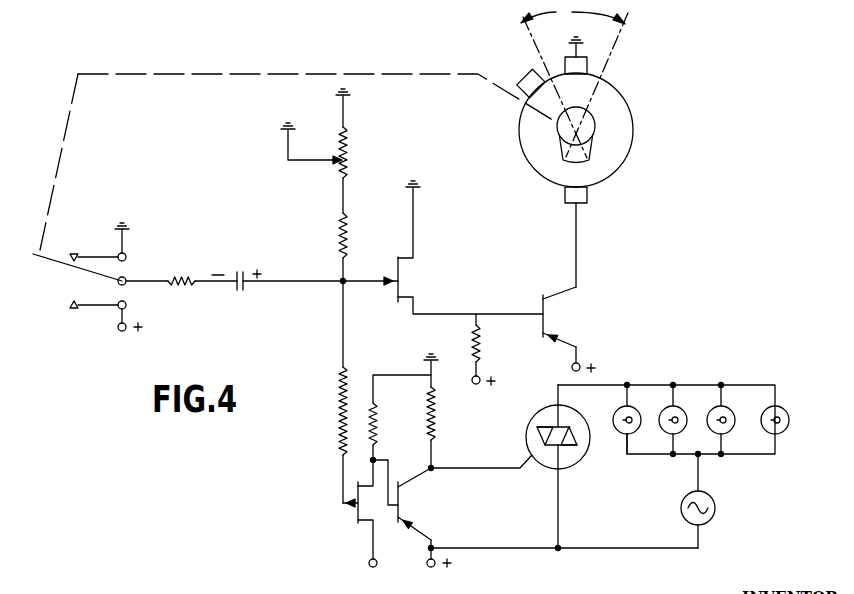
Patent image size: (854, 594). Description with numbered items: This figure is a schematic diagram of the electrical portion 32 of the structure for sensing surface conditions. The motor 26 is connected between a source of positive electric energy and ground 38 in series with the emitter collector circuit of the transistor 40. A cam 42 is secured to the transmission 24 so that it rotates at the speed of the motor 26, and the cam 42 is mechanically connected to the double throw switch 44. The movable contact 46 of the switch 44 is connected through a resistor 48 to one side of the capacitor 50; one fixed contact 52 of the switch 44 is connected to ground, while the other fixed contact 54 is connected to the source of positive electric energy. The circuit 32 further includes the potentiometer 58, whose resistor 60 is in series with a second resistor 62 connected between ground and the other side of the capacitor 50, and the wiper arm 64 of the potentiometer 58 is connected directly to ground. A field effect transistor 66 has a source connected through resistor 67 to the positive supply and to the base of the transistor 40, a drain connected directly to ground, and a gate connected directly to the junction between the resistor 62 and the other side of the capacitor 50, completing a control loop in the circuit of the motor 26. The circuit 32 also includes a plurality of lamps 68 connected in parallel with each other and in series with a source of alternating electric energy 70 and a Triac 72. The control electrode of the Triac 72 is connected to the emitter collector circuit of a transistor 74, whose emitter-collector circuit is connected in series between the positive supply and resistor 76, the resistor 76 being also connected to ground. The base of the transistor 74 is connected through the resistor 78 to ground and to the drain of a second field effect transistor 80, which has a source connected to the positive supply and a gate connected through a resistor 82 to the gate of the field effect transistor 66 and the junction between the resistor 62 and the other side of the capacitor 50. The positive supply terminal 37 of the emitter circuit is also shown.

The transmission 24 is at (592, 120).
The motor 26 is at (633, 127).
The electrical portion 32 is at (652, 301).
The emitter supply terminal 37 is at (574, 351).
The ground 38 is at (583, 40).
The transistor 40 is at (543, 296).
The cam 42 is at (580, 162).
The double throw switch 44 is at (126, 277).
The movable contact 46 is at (57, 263).
The resistor 48 is at (185, 276).
The capacitor 50 is at (243, 291).
The fixed contact 52 is at (97, 257).
The fixed contact 54 is at (100, 306).
The potentiometer 58 is at (345, 141).
The resistor 60 is at (346, 179).
The second resistor 62 is at (338, 232).
The wiper arm 64 is at (308, 162).
The field effect transistor 66 is at (402, 278).
The resistor 67 is at (480, 348).
The lamps 68 is at (781, 410).
The source of alternating electric energy 70 is at (710, 498).
The Triac 72 is at (580, 461).
The transistor 74 is at (404, 498).
The resistor 76 is at (437, 418).
The resistor 78 is at (377, 430).
The second field effect transistor 80 is at (355, 518).
The resistor 82 is at (340, 413).